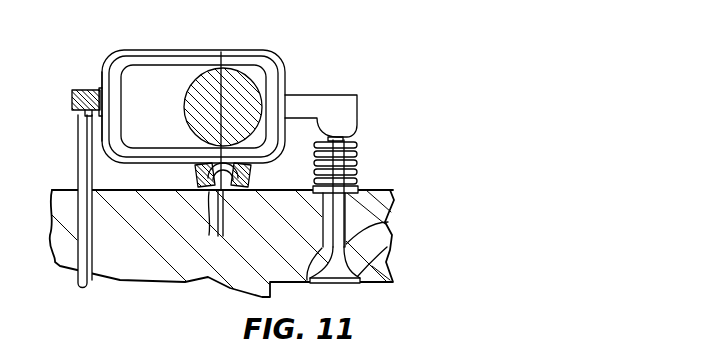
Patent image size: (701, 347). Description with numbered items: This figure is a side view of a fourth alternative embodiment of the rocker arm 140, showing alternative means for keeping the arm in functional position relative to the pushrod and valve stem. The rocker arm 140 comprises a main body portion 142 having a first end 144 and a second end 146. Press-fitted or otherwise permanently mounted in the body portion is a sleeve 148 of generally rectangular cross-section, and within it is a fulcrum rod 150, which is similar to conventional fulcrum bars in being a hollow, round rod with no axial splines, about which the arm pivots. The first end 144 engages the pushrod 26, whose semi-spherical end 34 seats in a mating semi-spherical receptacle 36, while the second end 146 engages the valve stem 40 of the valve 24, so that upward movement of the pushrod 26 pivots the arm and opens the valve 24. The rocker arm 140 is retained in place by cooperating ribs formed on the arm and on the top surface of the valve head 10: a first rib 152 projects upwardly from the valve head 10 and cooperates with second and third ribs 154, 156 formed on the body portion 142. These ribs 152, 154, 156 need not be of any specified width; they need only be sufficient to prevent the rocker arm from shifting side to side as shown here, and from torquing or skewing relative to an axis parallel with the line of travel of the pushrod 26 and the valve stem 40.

The valve head 10 is at (63, 197).
The valve 24 is at (338, 283).
The pushrod 26 is at (83, 260).
The semi-spherical end 34 is at (70, 84).
The semi-spherical receptacle 36 is at (85, 110).
The valve stem 40 is at (397, 225).
The rocker arm 140 is at (246, 120).
The main body portion 142 is at (110, 58).
The first end 144 is at (78, 88).
The second end 146 is at (352, 113).
The sleeve 148 is at (183, 62).
The fulcrum rod 150 is at (254, 98).
The first rib 152 is at (215, 237).
The second rib 154 is at (194, 172).
The third rib 156 is at (247, 176).